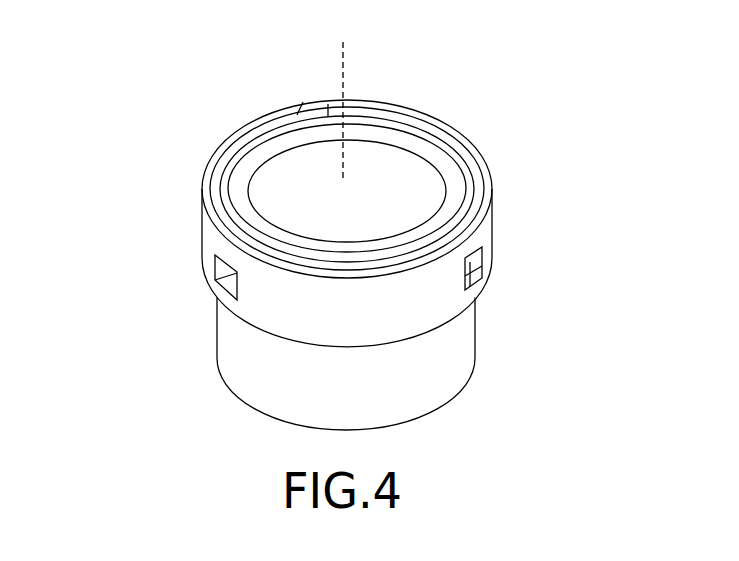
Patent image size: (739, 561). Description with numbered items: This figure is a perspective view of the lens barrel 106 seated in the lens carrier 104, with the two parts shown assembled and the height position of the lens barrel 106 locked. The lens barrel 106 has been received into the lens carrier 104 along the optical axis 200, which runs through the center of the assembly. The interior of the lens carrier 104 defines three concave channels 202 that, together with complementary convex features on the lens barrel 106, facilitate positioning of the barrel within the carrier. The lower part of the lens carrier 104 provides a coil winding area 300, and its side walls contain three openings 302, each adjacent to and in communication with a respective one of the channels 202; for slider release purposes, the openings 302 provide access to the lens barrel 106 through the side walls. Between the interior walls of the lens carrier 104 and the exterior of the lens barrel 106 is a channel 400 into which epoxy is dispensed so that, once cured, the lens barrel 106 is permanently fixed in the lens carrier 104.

The lens carrier 104 is at (166, 292).
The lens barrel 106 is at (289, 178).
The optical axis 200 is at (343, 73).
The concave channels 202 is at (303, 102).
The coil winding area 300 is at (455, 357).
The openings 302 is at (248, 308).
The channel 400 is at (456, 128).